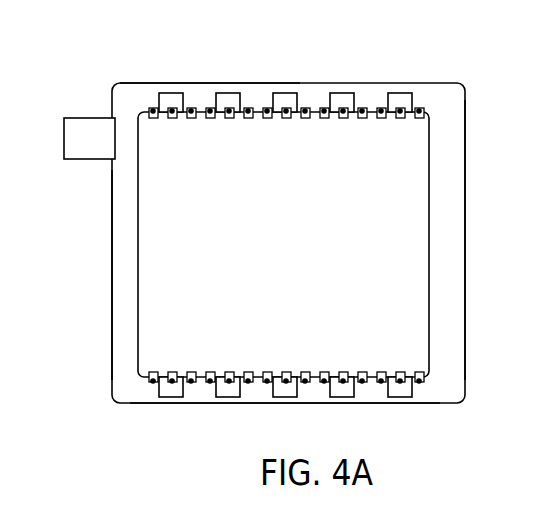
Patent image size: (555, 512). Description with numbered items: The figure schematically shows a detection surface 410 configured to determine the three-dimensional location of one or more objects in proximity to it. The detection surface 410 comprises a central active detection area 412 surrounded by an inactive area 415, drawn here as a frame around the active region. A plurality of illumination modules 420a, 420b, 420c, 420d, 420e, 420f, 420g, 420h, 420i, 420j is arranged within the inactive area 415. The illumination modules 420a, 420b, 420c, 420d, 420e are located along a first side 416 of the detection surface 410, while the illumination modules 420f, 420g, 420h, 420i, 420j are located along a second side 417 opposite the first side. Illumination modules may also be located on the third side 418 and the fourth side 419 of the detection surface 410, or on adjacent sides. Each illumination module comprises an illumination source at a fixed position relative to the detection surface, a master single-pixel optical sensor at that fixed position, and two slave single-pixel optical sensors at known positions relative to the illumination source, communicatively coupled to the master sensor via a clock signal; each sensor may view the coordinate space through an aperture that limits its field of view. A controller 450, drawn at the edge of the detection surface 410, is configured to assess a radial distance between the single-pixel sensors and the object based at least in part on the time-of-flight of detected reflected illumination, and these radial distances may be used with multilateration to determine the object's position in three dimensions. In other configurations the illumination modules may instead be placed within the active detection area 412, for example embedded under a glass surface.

The detection surface 410 is at (127, 30).
The active detection area 412 is at (310, 256).
The inactive area 415 is at (461, 110).
The first side 416 is at (145, 405).
The second side 417 is at (142, 85).
The third side 418 is at (112, 252).
The fourth side 419 is at (467, 242).
The controller 450 is at (103, 148).
The illumination module 420a is at (173, 401).
The illumination module 420b is at (230, 401).
The illumination module 420c is at (287, 401).
The illumination module 420d is at (344, 401).
The illumination module 420e is at (402, 401).
The illumination module 420f is at (173, 90).
The illumination module 420g is at (230, 90).
The illumination module 420h is at (287, 90).
The illumination module 420i is at (344, 90).
The illumination module 420j is at (402, 90).